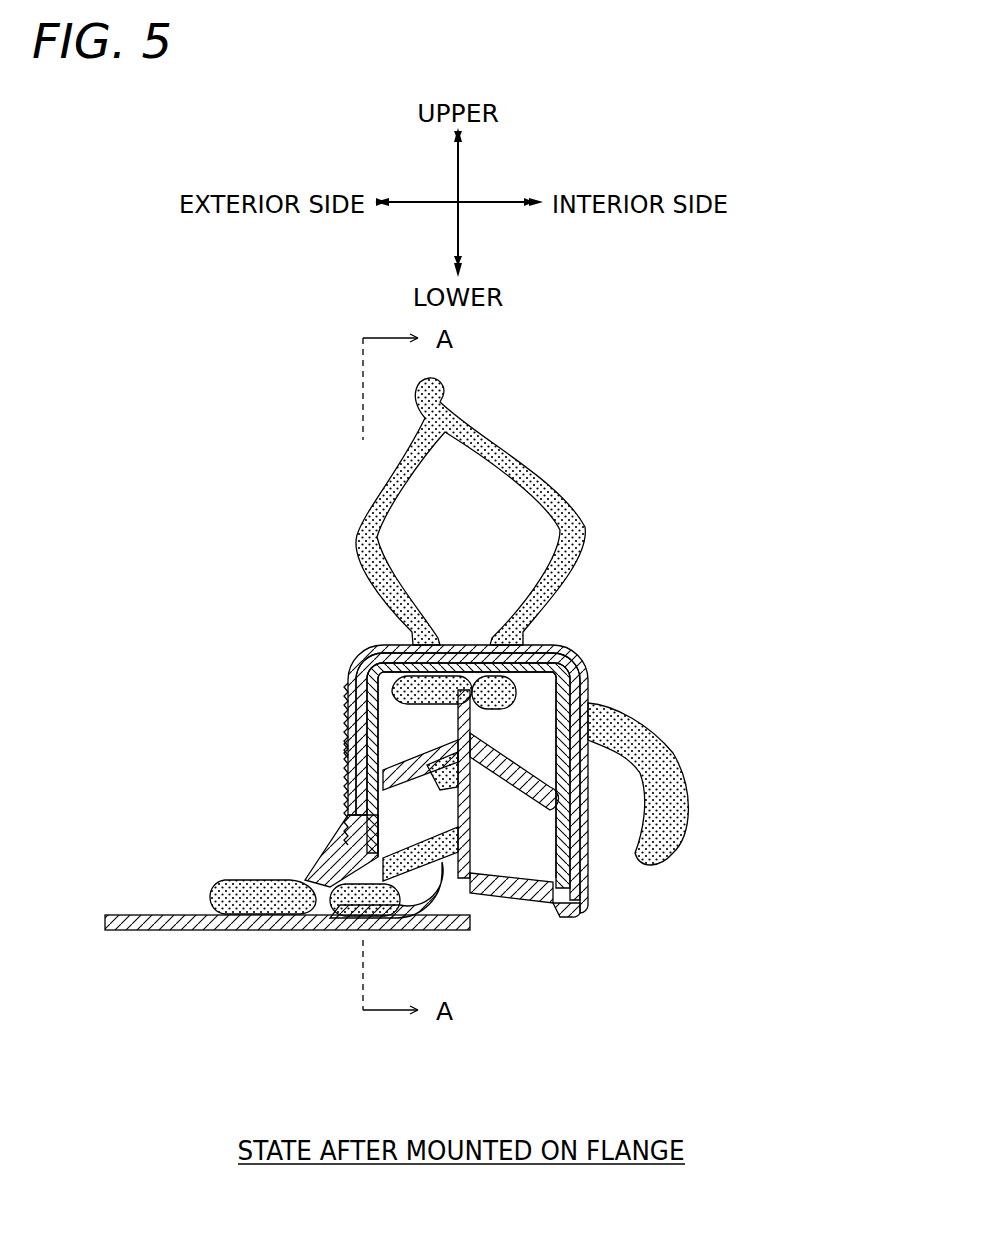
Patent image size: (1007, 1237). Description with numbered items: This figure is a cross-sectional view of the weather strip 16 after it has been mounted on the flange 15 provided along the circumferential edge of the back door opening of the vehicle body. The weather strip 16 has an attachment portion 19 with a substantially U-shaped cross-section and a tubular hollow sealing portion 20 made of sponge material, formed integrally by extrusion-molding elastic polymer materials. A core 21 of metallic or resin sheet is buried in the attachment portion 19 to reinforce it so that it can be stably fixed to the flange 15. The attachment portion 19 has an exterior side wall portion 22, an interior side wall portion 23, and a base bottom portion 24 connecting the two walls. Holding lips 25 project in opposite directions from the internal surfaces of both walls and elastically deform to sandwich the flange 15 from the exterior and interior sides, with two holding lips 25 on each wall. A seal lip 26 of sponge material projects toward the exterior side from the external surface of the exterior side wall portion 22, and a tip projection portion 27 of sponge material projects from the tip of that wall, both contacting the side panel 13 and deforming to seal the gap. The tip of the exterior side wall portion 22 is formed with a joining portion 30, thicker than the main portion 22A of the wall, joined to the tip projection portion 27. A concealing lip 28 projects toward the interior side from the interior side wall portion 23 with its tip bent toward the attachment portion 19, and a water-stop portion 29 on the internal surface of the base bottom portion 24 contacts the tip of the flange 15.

The side panel 13 is at (150, 913).
The flange 15 is at (347, 771).
The weather strip 16 is at (560, 640).
The attachment portion 19 is at (580, 663).
The tubular hollow sealing portion 20 is at (540, 465).
The core 21 is at (588, 843).
The exterior side wall portion 22 is at (343, 723).
The main portion 22A is at (345, 752).
The interior side wall portion 23 is at (588, 810).
The base bottom portion 24 is at (383, 650).
The holding lips 25 is at (433, 783).
The seal lip 26 is at (247, 882).
The tip projection portion 27 is at (317, 927).
The concealing lip 28 is at (687, 757).
The water-stop portion 29 is at (350, 687).
The joining portion 30 is at (317, 858).